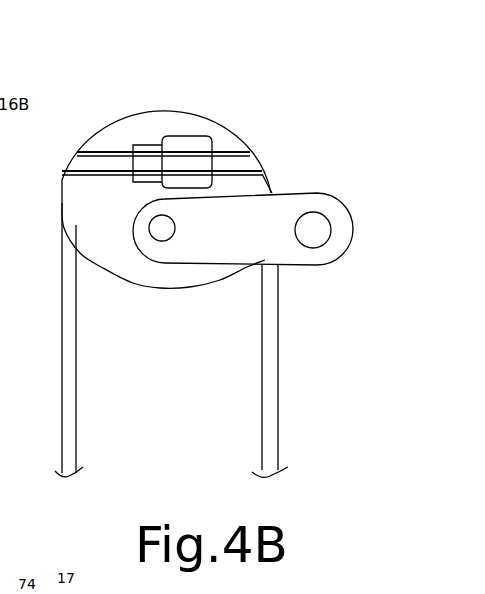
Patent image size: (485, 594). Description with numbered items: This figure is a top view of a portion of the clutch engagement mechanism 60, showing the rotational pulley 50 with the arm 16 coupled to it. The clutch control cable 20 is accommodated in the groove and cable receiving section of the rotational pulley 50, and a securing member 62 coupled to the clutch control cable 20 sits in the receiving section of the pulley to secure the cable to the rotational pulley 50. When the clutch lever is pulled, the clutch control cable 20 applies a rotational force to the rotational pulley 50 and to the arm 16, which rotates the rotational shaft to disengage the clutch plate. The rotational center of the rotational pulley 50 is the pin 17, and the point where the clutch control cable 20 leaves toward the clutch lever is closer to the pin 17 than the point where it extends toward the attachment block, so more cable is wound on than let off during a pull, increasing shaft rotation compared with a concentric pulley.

The clutch engagement mechanism 60 is at (100, 107).
The securing member 62 is at (155, 182).
The arm 16 is at (292, 192).
The pin 17 is at (160, 230).
The rotational pulley 50 is at (192, 287).
The clutch control cable 20 is at (77, 398).